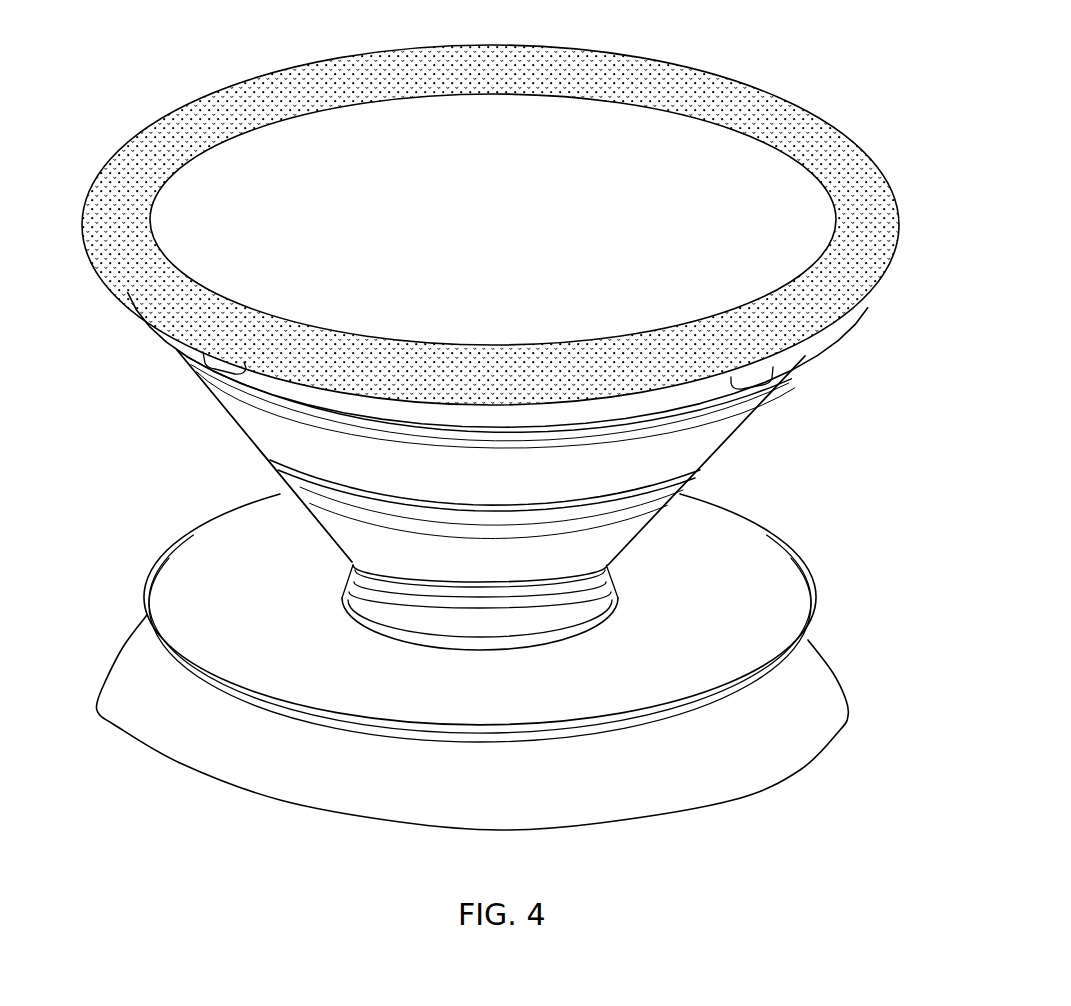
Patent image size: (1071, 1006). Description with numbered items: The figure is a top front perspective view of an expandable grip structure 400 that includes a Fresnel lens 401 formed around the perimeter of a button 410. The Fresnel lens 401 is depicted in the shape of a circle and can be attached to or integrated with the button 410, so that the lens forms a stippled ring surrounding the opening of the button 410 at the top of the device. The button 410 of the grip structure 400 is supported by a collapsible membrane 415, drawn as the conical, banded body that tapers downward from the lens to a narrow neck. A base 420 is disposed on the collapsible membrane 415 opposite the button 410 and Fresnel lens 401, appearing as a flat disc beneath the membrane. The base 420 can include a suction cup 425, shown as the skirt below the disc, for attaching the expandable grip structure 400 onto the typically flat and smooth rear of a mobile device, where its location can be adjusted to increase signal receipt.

The expandable grip structure 400 is at (133, 45).
The Fresnel lens 401 is at (676, 50).
The button 410 is at (362, 194).
The collapsible membrane 415 is at (768, 430).
The base 420 is at (138, 611).
The suction cup 425 is at (800, 755).